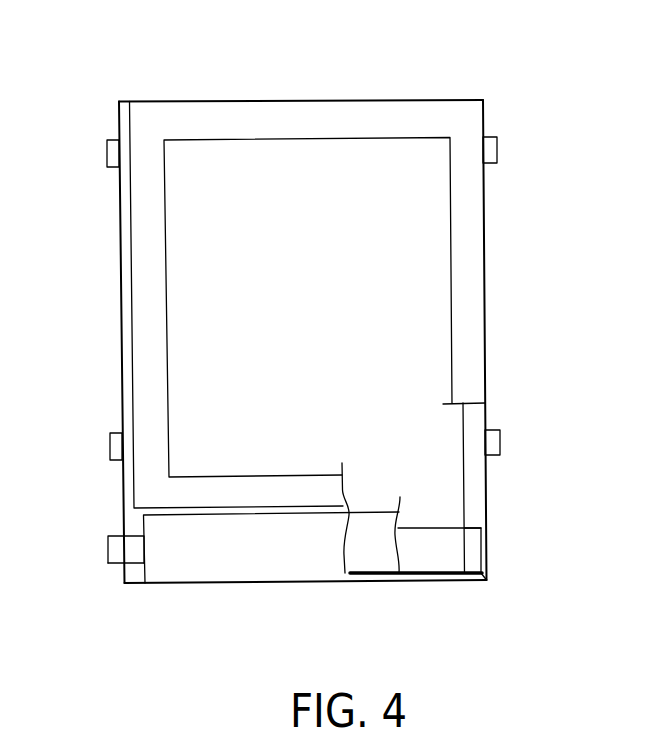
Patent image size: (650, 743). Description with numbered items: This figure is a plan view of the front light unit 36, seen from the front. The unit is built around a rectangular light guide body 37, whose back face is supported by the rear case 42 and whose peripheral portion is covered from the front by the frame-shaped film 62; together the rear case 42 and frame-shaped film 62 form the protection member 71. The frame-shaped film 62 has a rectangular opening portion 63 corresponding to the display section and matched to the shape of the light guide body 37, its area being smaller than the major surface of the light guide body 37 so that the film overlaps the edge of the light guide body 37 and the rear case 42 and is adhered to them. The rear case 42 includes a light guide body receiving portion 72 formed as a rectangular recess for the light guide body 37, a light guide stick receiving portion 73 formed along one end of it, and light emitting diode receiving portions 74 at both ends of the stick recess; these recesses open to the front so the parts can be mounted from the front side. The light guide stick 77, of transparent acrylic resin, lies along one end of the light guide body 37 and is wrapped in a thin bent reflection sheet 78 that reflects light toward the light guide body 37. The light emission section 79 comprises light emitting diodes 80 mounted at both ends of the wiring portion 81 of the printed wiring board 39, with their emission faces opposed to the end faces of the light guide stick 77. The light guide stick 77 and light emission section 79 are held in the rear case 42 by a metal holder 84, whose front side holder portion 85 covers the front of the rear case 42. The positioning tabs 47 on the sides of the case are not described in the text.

The front light unit 36 is at (98, 321).
The light guide body 37 is at (256, 150).
The printed wiring board 39 is at (113, 536).
The rear case 42 is at (472, 408).
The positioning tab 47 is at (107, 152).
The frame-shaped film 62 is at (393, 108).
The opening portion 63 is at (320, 138).
The protection member 71 is at (475, 294).
The light guide body receiving portion 72 is at (463, 455).
The light guide stick receiving portion 73 is at (455, 574).
The light emitting diode receiving portion 74 is at (482, 581).
The light guide stick 77 is at (427, 558).
The reflection sheet 78 is at (375, 558).
The light emission section 79 is at (472, 532).
The light emitting diode 80 is at (468, 548).
The wiring portion 81 is at (118, 558).
The holder 84 is at (235, 582).
The front side holder portion 85 is at (300, 558).